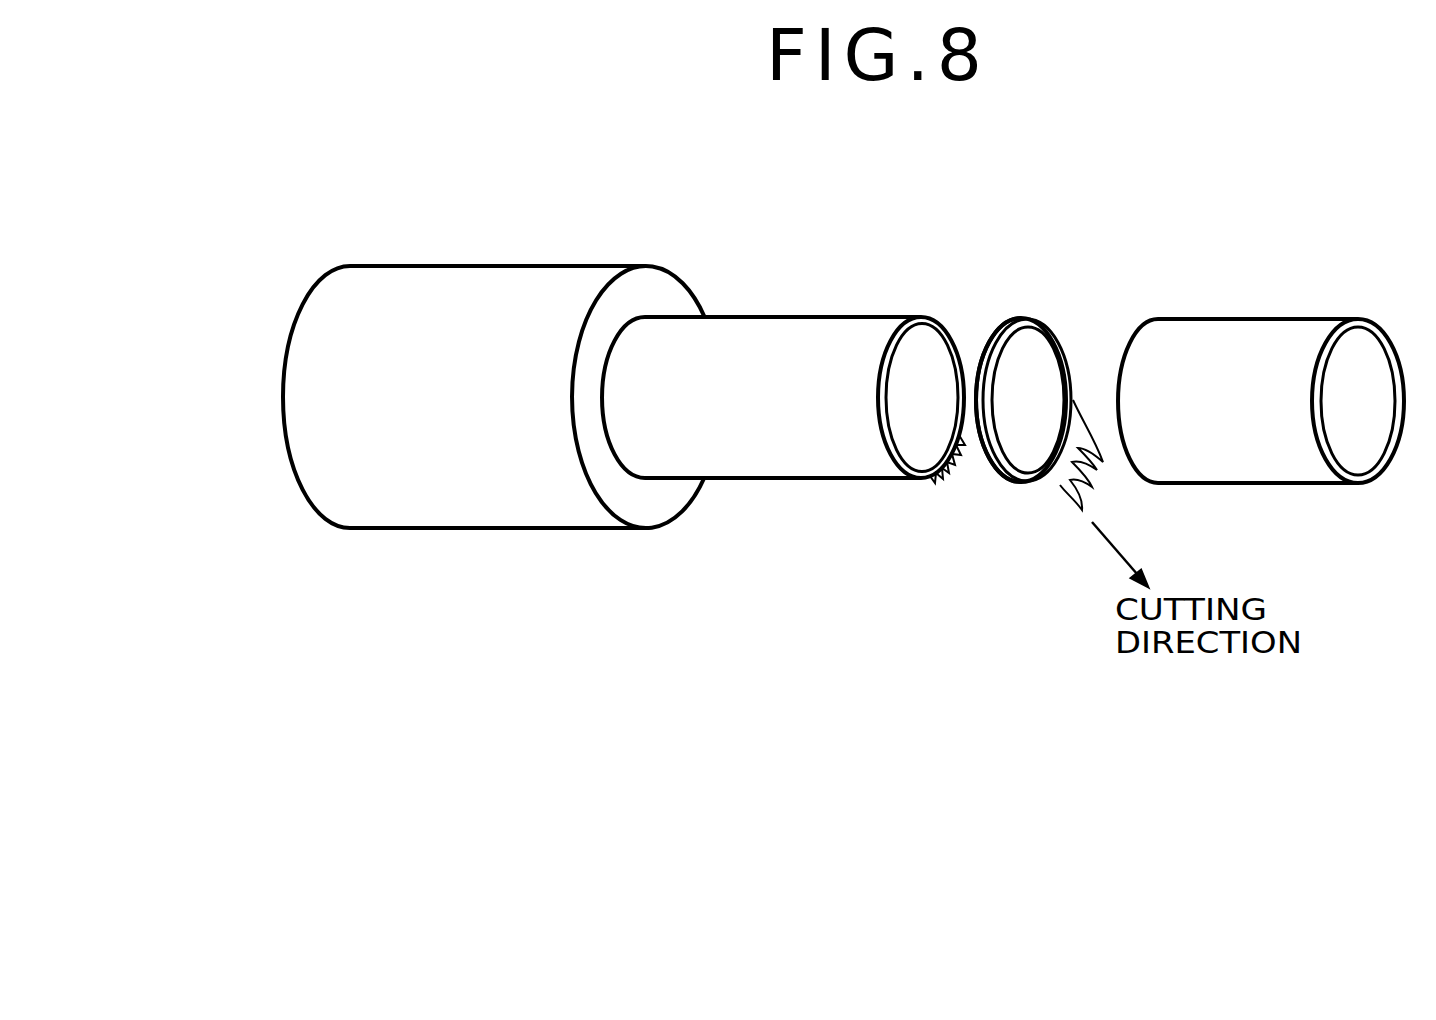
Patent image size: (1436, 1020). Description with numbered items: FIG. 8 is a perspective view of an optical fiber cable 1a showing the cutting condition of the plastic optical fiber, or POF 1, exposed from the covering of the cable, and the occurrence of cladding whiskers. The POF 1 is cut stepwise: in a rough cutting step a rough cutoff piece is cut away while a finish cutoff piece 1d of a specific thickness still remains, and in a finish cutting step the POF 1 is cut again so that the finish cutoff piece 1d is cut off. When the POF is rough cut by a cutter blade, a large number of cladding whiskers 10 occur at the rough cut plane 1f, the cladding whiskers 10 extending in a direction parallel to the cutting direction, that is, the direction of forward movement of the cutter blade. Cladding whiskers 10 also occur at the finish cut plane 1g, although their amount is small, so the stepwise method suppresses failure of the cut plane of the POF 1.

The POF 1 is at (768, 480).
The optical fiber cable 1a is at (443, 528).
The finish cut plane 1g is at (937, 353).
The rough cut plane 1f is at (1045, 363).
The finish cutoff piece 1d is at (997, 475).
The cladding whiskers 10 is at (943, 481).